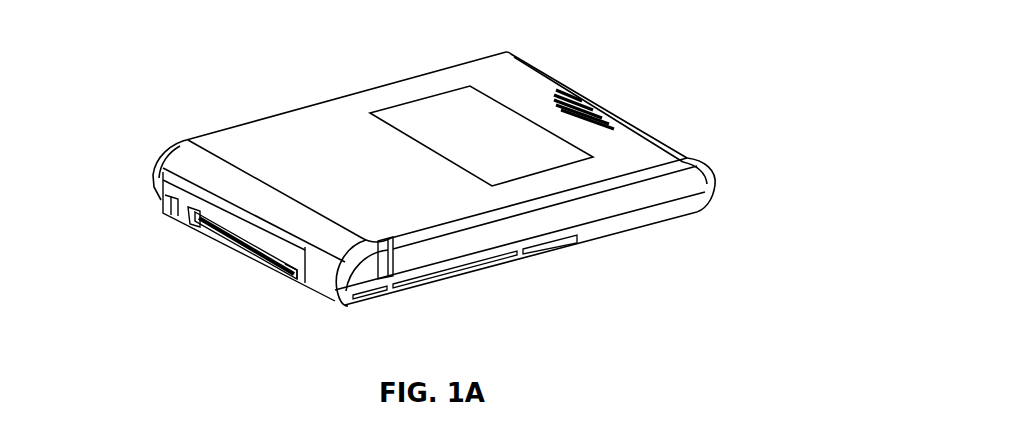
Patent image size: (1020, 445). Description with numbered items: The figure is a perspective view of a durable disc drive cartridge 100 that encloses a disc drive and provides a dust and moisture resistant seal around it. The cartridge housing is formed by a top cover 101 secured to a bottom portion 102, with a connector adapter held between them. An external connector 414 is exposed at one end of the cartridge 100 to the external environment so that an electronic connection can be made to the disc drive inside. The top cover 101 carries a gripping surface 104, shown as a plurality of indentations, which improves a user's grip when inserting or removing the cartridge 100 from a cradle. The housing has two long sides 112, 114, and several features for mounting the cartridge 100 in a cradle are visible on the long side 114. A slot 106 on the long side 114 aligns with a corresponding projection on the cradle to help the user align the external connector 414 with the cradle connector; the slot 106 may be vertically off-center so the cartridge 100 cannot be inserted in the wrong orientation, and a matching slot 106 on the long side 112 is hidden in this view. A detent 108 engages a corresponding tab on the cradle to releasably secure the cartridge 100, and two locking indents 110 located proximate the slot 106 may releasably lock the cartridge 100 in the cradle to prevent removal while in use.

The cartridge 100 is at (94, 128).
The top cover 101 is at (340, 187).
The bottom portion 102 is at (627, 218).
The gripping surface 104 is at (579, 108).
The slot 106 is at (546, 249).
The detent 108 is at (383, 267).
The locking indents 110 is at (393, 300).
The long side 112 is at (348, 97).
The long side 114 is at (675, 202).
The external connector 414 is at (240, 247).